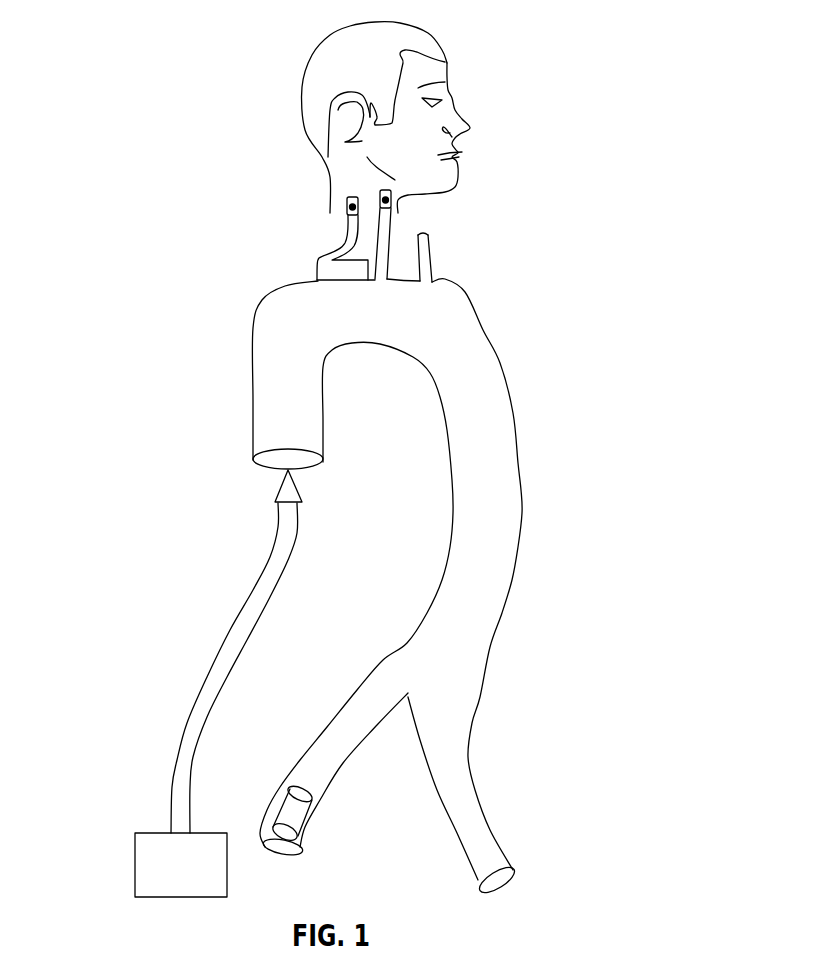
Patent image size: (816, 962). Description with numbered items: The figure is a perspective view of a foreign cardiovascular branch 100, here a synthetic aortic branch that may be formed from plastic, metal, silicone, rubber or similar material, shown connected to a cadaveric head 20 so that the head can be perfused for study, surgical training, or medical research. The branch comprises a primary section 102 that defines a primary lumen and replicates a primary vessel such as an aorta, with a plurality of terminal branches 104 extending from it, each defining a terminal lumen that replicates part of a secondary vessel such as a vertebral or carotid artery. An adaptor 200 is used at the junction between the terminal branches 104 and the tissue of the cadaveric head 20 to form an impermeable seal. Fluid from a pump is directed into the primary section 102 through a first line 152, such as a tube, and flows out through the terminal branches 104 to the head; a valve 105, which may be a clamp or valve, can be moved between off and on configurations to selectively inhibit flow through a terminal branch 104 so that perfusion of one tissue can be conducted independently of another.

The foreign cardiovascular branch 100 is at (588, 30).
The cadaveric head 20 is at (336, 39).
The adaptor 200 is at (350, 210).
The terminal branch 104 is at (365, 260).
The primary section 102 is at (523, 473).
The first line 152 is at (284, 587).
The valve 105 is at (135, 865).